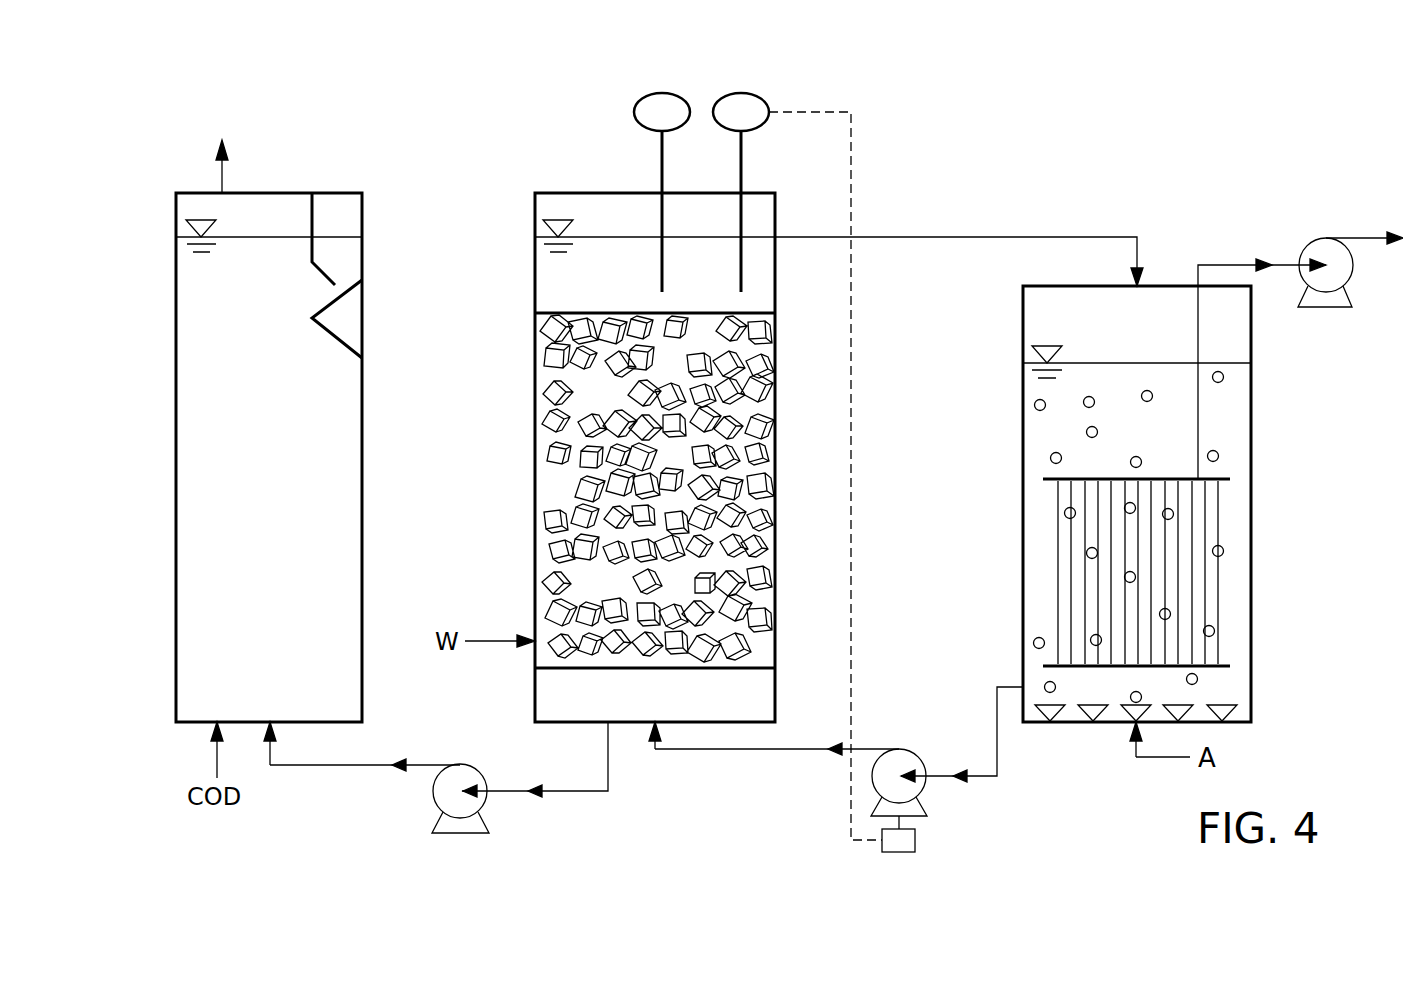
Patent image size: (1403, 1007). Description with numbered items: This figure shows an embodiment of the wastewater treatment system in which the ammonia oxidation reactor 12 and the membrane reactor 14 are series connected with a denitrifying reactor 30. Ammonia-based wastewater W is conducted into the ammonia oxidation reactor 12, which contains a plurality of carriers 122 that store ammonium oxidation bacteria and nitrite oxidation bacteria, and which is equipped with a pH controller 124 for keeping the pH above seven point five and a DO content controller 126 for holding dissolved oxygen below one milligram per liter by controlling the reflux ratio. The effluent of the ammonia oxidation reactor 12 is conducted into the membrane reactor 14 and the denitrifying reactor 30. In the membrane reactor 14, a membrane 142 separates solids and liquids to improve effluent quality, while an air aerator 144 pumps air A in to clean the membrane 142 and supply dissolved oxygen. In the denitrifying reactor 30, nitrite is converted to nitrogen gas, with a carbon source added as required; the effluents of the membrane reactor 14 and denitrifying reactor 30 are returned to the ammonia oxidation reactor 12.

The denitrifying reactor 30 is at (176, 463).
The ammonia oxidation reactor 12 is at (535, 466).
The carriers 122 is at (553, 375).
The pH controller 124 is at (663, 93).
The DO content controller 126 is at (742, 93).
The membrane reactor 14 is at (1253, 503).
The membrane 142 is at (1213, 573).
The air aerator 144 is at (1222, 703).